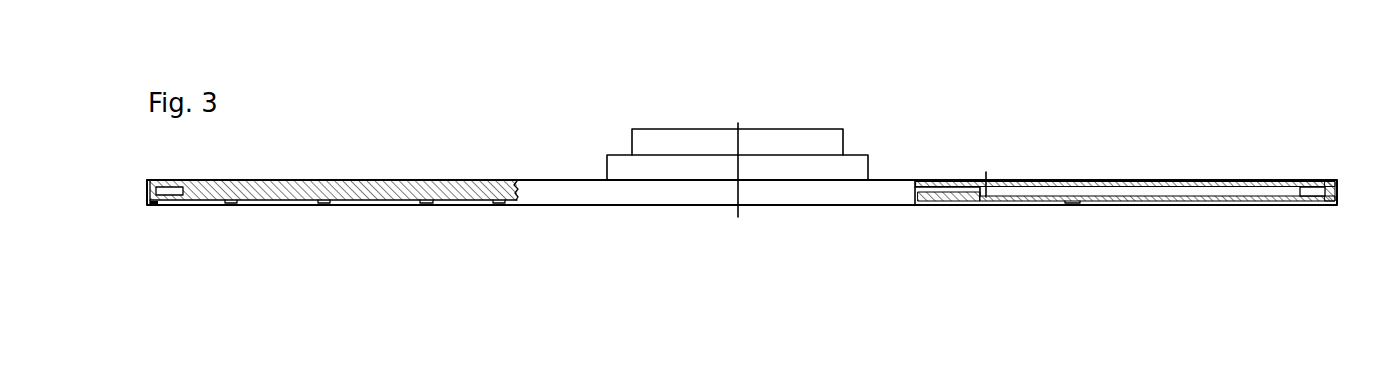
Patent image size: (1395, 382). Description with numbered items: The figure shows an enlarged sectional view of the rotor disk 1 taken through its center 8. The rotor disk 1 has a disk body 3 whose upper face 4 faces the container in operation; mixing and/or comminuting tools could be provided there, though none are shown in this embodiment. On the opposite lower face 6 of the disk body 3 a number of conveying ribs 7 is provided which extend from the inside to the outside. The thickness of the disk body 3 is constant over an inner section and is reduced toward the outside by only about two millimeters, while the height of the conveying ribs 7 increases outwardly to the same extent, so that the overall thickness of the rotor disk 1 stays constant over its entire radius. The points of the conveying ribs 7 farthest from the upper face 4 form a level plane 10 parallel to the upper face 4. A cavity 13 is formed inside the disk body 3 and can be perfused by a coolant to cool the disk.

The rotor disk 1 is at (964, 96).
The disk body 3 is at (290, 186).
The upper face 4 is at (217, 177).
The lower face 6 is at (186, 212).
The conveying ribs 7 is at (229, 206).
The center 8 is at (738, 123).
The level plane 10 is at (498, 206).
The cavity 13 is at (1033, 180).